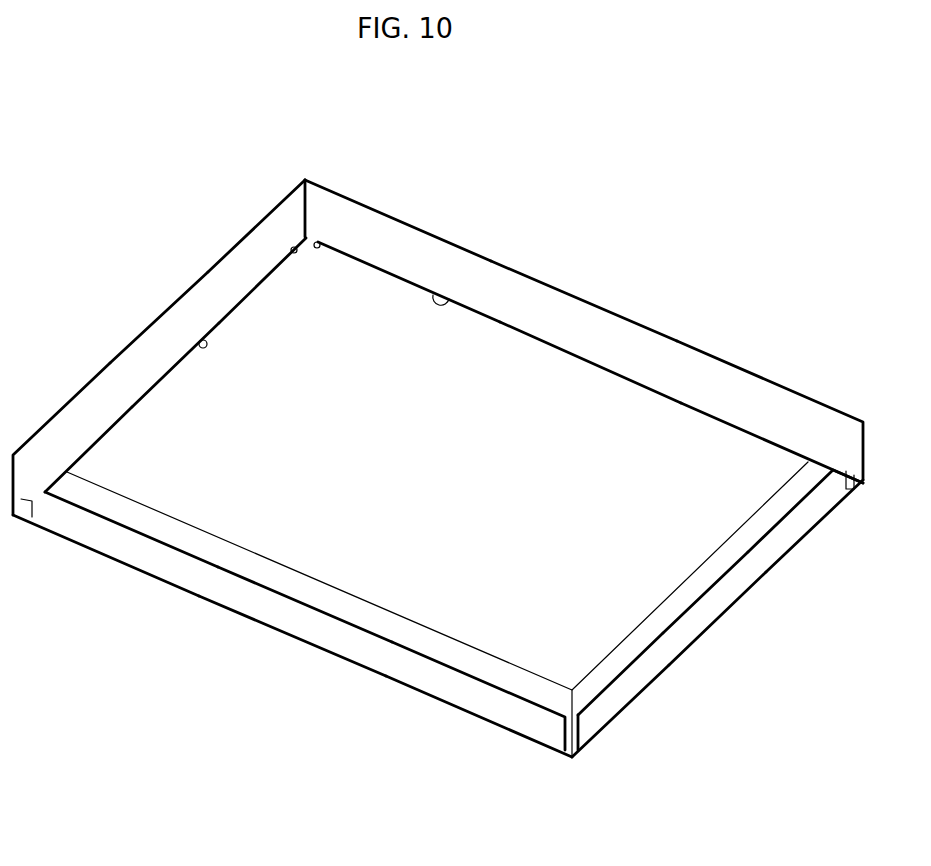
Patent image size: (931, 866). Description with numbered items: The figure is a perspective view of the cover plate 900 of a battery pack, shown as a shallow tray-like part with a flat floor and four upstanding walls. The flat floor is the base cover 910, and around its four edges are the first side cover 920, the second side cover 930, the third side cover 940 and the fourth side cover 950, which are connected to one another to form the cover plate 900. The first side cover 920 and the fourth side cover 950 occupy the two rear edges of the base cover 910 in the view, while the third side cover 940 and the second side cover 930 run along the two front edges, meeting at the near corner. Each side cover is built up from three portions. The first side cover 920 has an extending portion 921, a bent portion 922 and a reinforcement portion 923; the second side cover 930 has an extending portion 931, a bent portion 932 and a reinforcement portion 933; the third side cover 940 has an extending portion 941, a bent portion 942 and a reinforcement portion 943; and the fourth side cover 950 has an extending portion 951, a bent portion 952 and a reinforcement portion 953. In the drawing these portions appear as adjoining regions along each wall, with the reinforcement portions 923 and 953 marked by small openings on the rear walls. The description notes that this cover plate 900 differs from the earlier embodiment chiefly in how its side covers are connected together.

The cover plate 900 is at (238, 135).
The base cover 910 is at (672, 450).
The first side cover 920 is at (172, 172).
The extending portion 921 is at (133, 361).
The bent portion 922 is at (268, 275).
The reinforcement portion 923 is at (197, 343).
The second side cover 930 is at (820, 658).
The extending portion 931 is at (636, 639).
The bent portion 932 is at (697, 632).
The reinforcement portion 933 is at (737, 582).
The third side cover 940 is at (293, 762).
The extending portion 941 is at (225, 552).
The bent portion 942 is at (263, 618).
The reinforcement portion 943 is at (335, 635).
The fourth side cover 950 is at (672, 243).
The extending portion 951 is at (635, 350).
The bent portion 952 is at (535, 340).
The reinforcement portion 953 is at (450, 305).